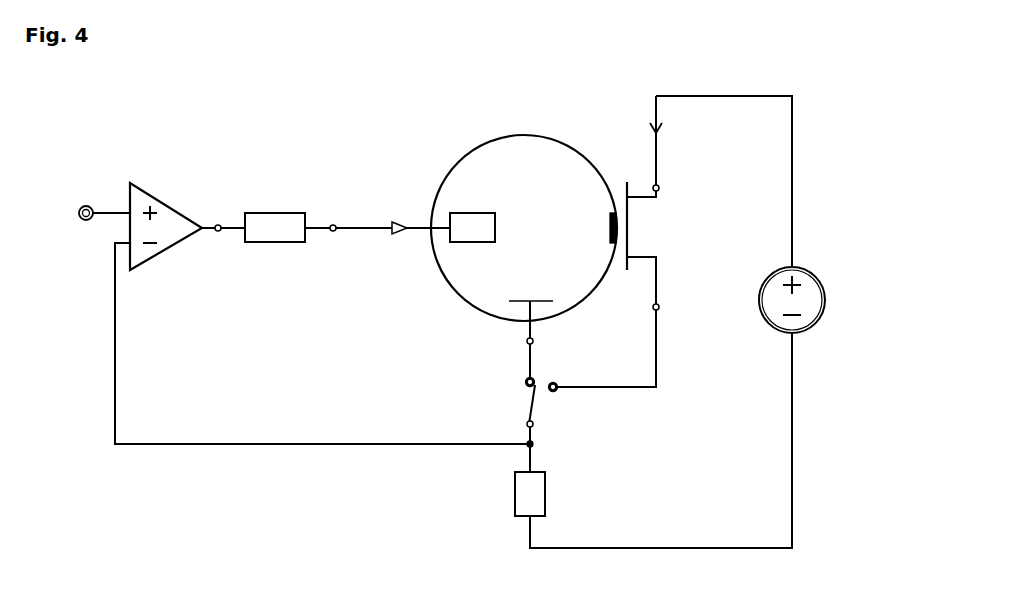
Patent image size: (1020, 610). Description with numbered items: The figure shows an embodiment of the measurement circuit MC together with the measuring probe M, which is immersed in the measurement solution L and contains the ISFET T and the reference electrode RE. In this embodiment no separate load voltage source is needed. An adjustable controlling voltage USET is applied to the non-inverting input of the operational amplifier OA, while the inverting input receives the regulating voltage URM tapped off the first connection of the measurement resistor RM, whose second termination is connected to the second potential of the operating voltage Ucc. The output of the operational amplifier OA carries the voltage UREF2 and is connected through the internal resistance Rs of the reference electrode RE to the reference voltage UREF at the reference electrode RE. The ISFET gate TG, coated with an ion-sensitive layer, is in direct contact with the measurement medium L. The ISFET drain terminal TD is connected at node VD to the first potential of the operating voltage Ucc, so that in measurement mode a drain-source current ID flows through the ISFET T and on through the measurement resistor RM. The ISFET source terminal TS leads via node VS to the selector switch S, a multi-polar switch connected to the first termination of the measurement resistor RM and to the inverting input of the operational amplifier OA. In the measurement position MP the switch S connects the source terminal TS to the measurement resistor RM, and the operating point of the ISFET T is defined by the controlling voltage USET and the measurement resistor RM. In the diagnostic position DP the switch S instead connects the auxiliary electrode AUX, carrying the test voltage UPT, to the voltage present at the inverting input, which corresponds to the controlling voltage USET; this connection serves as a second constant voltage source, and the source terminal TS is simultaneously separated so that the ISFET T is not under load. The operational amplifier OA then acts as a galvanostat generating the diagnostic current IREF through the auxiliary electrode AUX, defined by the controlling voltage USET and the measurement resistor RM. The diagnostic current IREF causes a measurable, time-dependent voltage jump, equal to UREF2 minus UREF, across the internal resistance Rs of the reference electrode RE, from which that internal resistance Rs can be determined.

The controlling voltage USET is at (78, 214).
The operational amplifier OA is at (166, 234).
The measurement circuit MC is at (194, 470).
The reference voltage at the amplifier output UREF2 is at (219, 212).
The internal resistance of the reference electrode Rs is at (275, 211).
The reference voltage UREF is at (377, 213).
The diagnostic current IREF is at (364, 240).
The measuring probe M is at (443, 143).
The measurement solution L is at (517, 164).
The reference electrode RE is at (472, 239).
The ISFET gate TG is at (598, 228).
The ISFET T is at (680, 244).
The ISFET drain terminal TD is at (637, 188).
The ISFET source terminal TS is at (639, 270).
The drain connection node VD is at (671, 147).
The drain-source current ID is at (666, 123).
The source connection node VS is at (620, 342).
The operating voltage Ucc is at (696, 322).
The auxiliary electrode AUX is at (531, 331).
The test voltage UPT is at (512, 341).
The diagnostic position DP is at (515, 382).
The measurement position MP is at (558, 376).
The selector switch S is at (537, 414).
The regulating voltage URM is at (547, 454).
The measurement resistor RM is at (547, 494).